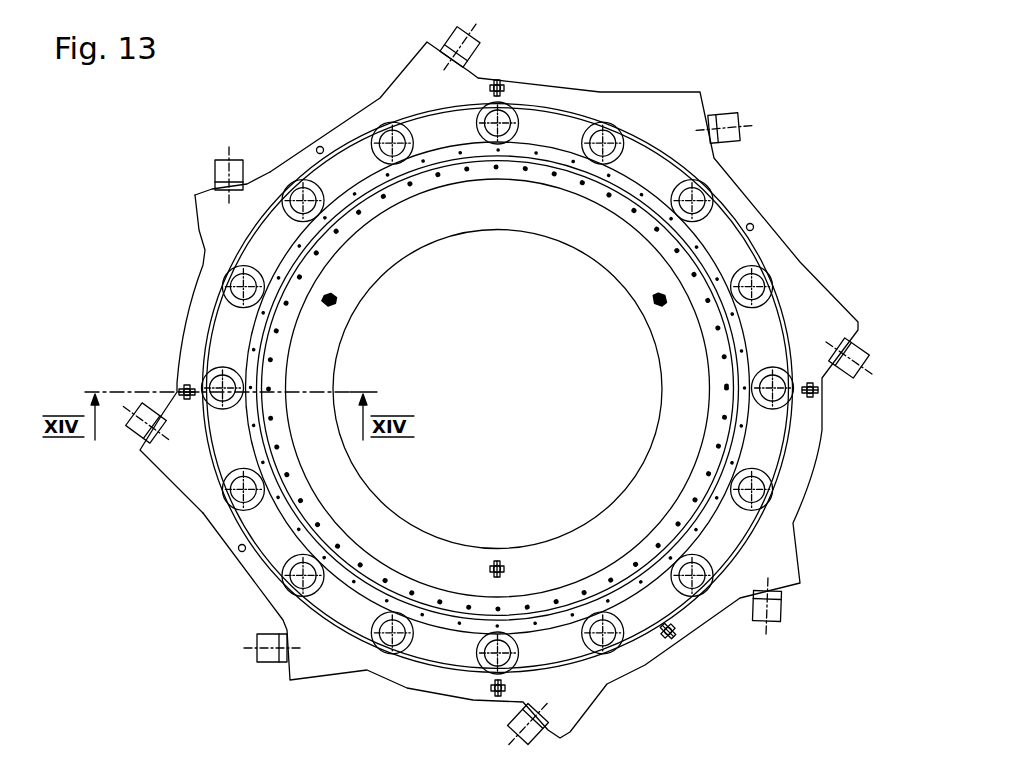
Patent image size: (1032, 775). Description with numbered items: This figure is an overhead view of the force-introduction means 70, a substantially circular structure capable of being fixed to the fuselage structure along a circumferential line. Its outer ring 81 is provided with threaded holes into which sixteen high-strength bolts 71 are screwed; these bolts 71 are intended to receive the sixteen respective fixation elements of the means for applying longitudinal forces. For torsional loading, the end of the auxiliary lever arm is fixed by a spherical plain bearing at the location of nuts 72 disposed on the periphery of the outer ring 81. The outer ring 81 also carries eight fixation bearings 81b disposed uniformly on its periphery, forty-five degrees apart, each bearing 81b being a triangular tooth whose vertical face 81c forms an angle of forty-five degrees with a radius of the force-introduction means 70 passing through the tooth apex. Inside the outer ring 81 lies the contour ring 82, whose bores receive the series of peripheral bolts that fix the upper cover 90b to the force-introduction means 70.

The force-introduction means 70 is at (800, 173).
The high-strength bolts 71 is at (507, 112).
The nuts 72 is at (783, 598).
The outer ring 81 is at (737, 255).
The fixation bearings 81b is at (210, 225).
The vertical face 81c is at (200, 180).
The contour ring 82 is at (730, 340).
The upper cover 90b is at (680, 412).